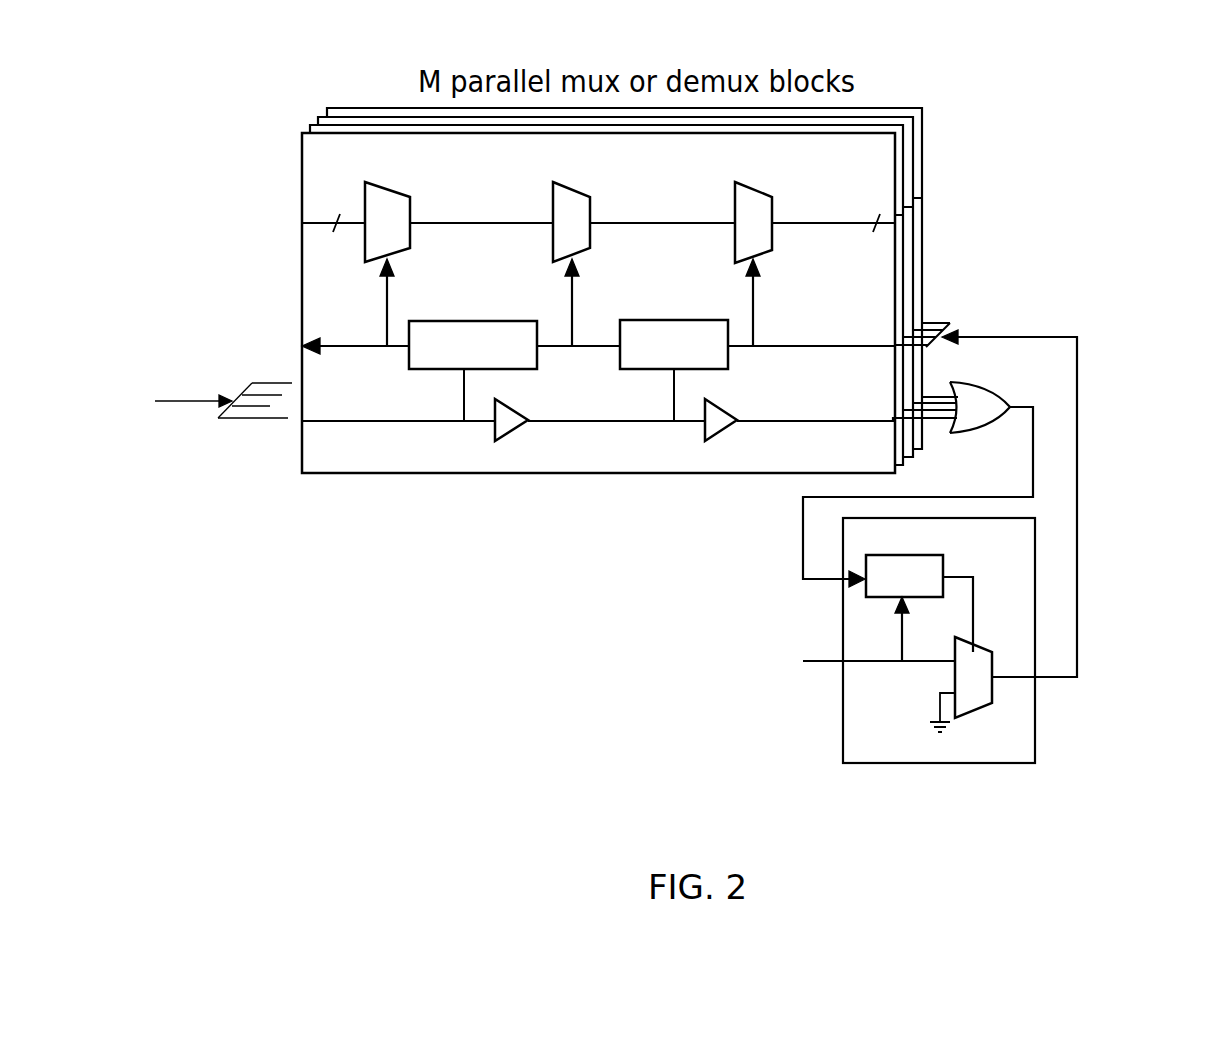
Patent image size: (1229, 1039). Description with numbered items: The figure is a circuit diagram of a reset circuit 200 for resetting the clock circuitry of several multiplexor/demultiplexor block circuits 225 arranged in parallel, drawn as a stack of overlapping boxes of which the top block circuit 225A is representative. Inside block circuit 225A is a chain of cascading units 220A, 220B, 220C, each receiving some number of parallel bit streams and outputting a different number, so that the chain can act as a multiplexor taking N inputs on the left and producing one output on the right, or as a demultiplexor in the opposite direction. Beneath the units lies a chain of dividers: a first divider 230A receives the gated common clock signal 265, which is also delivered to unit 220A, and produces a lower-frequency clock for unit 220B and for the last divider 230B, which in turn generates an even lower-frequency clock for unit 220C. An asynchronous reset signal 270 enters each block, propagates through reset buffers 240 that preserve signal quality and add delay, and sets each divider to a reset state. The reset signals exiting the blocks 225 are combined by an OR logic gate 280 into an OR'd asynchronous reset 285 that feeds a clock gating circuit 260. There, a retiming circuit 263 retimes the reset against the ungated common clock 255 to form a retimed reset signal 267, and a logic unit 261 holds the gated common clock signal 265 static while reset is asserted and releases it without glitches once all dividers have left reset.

The reset circuit 200 is at (1207, 56).
The block circuits 225 is at (272, 140).
The block circuit 225A is at (357, 163).
The first cascading unit 220A is at (745, 181).
The second cascading unit 220B is at (580, 185).
The third cascading unit 220C is at (394, 183).
The first divider 230A is at (700, 315).
The last divider 230B is at (514, 315).
The reset buffers 240 is at (526, 434).
The asynchronous reset signal 270 is at (172, 365).
The OR logic gate 280 is at (986, 415).
The OR'D async reset 285 is at (683, 565).
The clock gating circuit 260 is at (893, 745).
The logic unit 261 is at (983, 706).
The retiming circuit 263 is at (945, 560).
The retimed reset signal 267 is at (977, 597).
The ungated common clock 255 is at (757, 663).
The gated common clock signal 265 is at (1124, 672).